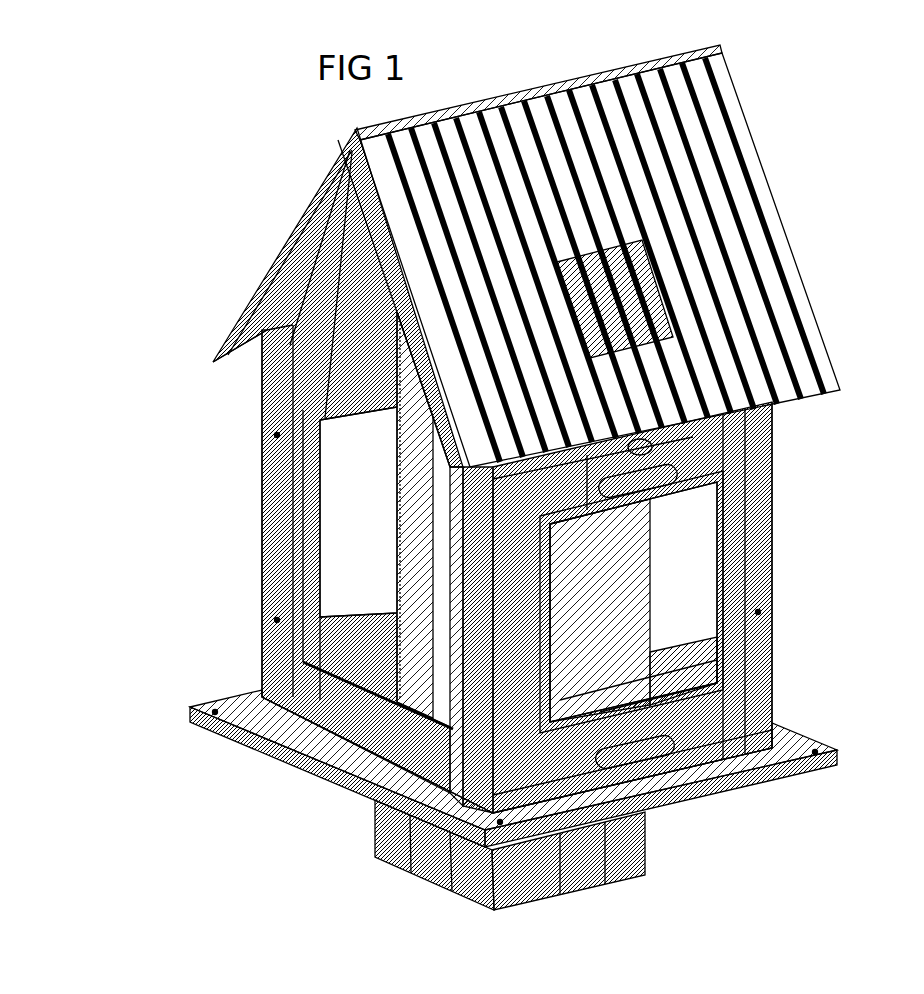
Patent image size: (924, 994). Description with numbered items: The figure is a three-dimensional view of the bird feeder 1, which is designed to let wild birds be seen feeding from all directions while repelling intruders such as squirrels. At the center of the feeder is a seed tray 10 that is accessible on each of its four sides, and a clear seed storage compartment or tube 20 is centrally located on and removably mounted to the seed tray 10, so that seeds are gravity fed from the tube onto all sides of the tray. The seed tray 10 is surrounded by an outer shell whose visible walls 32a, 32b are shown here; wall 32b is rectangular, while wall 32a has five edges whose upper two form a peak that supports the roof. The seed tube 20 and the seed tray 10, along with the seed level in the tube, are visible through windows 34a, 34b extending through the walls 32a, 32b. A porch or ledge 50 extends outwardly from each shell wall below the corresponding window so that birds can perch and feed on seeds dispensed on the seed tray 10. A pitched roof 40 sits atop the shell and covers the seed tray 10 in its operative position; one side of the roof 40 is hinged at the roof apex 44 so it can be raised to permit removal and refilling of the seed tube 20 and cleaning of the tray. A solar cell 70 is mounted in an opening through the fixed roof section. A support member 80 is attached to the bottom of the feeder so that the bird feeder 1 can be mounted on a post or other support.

The bird feeder 1 is at (232, 250).
The seed tray 10 is at (650, 680).
The seed storage compartment or tube 20 is at (420, 510).
The shell wall 32a is at (268, 388).
The shell wall 32b is at (773, 600).
The window 34a is at (343, 617).
The window 34b is at (683, 717).
The pitched roof 40 is at (700, 172).
The roof apex 44 is at (573, 80).
The porch or ledge 50 is at (293, 755).
The solar cell 70 is at (648, 300).
The support member 80 is at (627, 857).